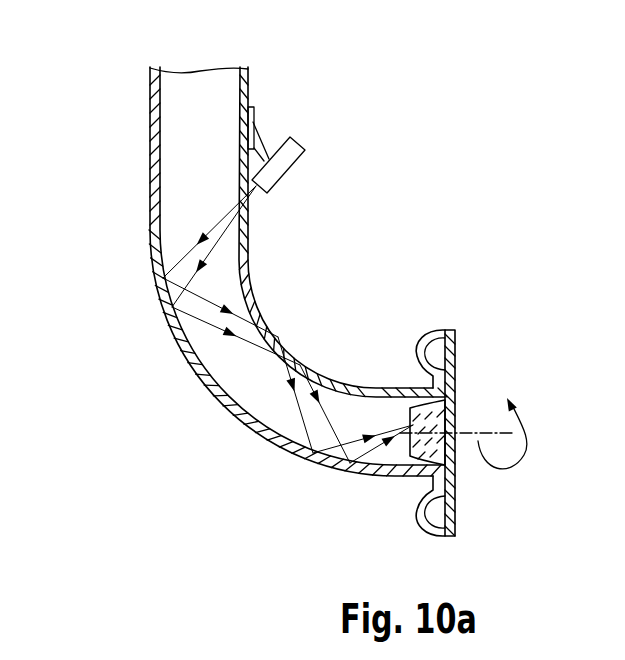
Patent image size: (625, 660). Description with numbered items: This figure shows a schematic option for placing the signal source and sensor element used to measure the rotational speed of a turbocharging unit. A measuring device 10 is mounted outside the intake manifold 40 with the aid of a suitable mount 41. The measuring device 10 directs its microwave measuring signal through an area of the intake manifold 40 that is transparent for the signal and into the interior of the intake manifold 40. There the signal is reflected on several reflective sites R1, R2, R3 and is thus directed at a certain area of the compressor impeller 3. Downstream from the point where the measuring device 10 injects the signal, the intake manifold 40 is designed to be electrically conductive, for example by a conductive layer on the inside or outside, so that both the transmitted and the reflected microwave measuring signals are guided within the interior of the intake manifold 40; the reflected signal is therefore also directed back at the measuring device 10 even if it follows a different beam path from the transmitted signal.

The intake manifold 40 is at (152, 113).
The mount 41 is at (255, 117).
The measuring device 10 is at (290, 158).
The reflective site R1 is at (160, 280).
The reflective site R2 is at (280, 333).
The reflective site R3 is at (313, 456).
The compressor impeller 3 is at (452, 410).